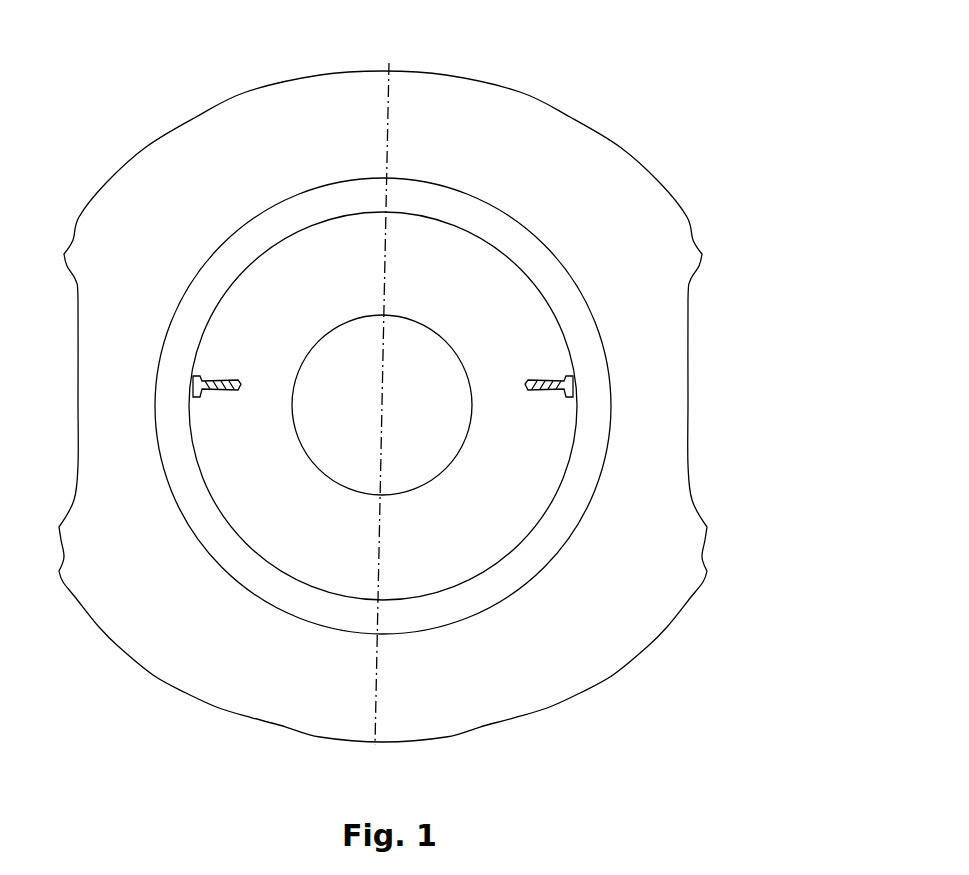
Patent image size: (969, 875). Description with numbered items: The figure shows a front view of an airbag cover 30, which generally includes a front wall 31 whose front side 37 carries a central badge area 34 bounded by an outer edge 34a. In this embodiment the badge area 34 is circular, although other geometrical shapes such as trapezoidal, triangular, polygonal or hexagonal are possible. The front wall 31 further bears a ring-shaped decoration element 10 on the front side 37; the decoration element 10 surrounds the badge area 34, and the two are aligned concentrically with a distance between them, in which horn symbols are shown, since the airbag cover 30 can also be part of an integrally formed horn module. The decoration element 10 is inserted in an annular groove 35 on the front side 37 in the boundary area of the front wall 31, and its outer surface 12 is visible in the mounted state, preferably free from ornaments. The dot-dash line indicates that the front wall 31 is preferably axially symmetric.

The airbag cover 30 is at (127, 85).
The front wall 31 is at (543, 137).
The front side 37 is at (615, 228).
The annular groove 35 is at (605, 460).
The decoration element 10 is at (588, 357).
The outer surface 12 is at (501, 406).
The central badge area 34 is at (432, 428).
The outer edge 34a is at (435, 478).